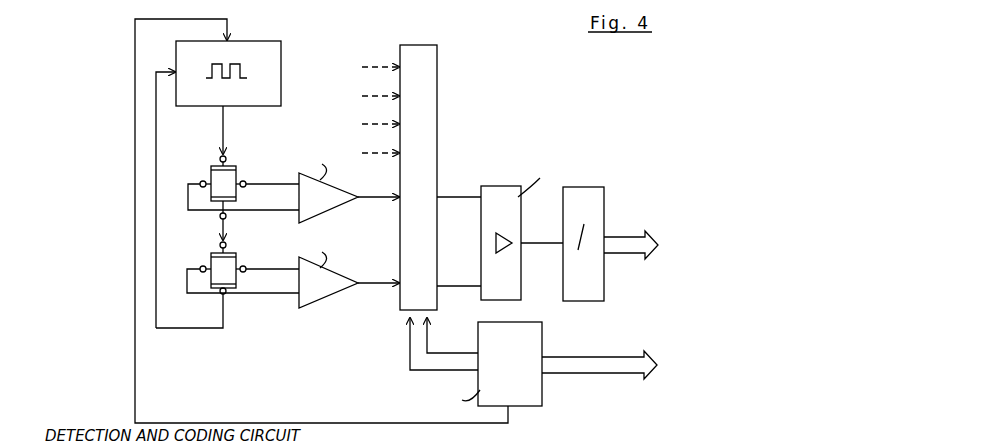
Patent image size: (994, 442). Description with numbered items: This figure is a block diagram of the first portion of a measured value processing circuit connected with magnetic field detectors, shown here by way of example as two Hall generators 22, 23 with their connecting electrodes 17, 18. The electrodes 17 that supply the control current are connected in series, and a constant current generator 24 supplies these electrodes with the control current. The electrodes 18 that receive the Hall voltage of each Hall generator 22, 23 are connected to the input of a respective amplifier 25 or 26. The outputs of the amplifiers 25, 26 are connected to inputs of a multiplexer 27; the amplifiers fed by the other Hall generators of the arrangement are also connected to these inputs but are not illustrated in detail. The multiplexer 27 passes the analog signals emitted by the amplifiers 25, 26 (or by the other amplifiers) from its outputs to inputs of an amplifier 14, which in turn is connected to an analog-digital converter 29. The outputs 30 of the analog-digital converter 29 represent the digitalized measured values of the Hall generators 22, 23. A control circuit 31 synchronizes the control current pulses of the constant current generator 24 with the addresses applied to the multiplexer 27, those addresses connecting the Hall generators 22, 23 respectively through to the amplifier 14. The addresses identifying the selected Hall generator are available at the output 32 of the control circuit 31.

The amplifier 14 is at (496, 192).
The connecting electrode 17 is at (219, 157).
The connecting electrode 18 is at (219, 217).
The Hall generator 22 is at (215, 178).
The Hall generator 23 is at (215, 275).
The constant current generator 24 is at (256, 56).
The amplifier 25 is at (330, 184).
The amplifier 26 is at (330, 271).
The multiplexer 27 is at (417, 55).
The analog-digital converter 29 is at (582, 200).
The outputs of the analog-digital converter 30 is at (658, 236).
The control circuit 31 is at (518, 380).
The output of the control circuit 32 is at (612, 368).